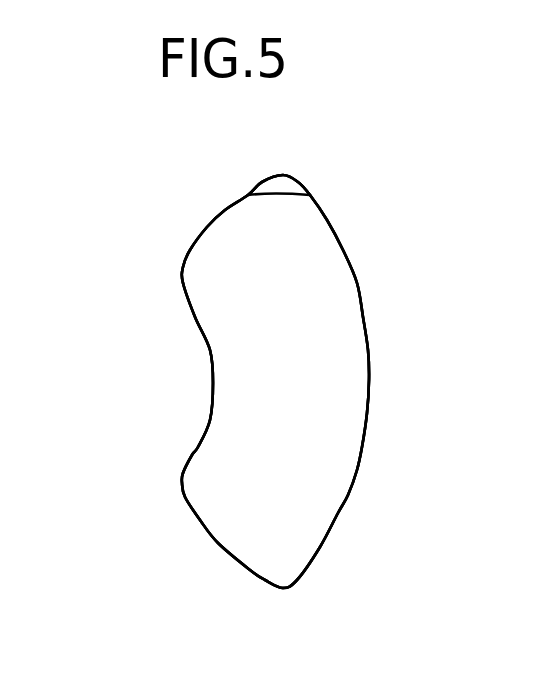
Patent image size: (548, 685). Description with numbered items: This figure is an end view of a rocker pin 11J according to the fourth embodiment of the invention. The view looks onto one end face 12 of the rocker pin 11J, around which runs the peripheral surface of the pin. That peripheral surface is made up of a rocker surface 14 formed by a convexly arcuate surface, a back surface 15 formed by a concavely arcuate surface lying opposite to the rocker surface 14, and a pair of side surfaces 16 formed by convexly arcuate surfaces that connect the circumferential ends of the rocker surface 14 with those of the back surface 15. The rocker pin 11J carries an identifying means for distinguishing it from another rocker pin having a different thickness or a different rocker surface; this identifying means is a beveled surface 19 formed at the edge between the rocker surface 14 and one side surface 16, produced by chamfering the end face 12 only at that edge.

The rocker pin 11J is at (200, 383).
The end face 12 is at (325, 458).
The rocker surface 14 is at (365, 318).
The back surface 15 is at (198, 453).
The side surface 16 is at (207, 227).
The beveled surface 19 is at (280, 180).